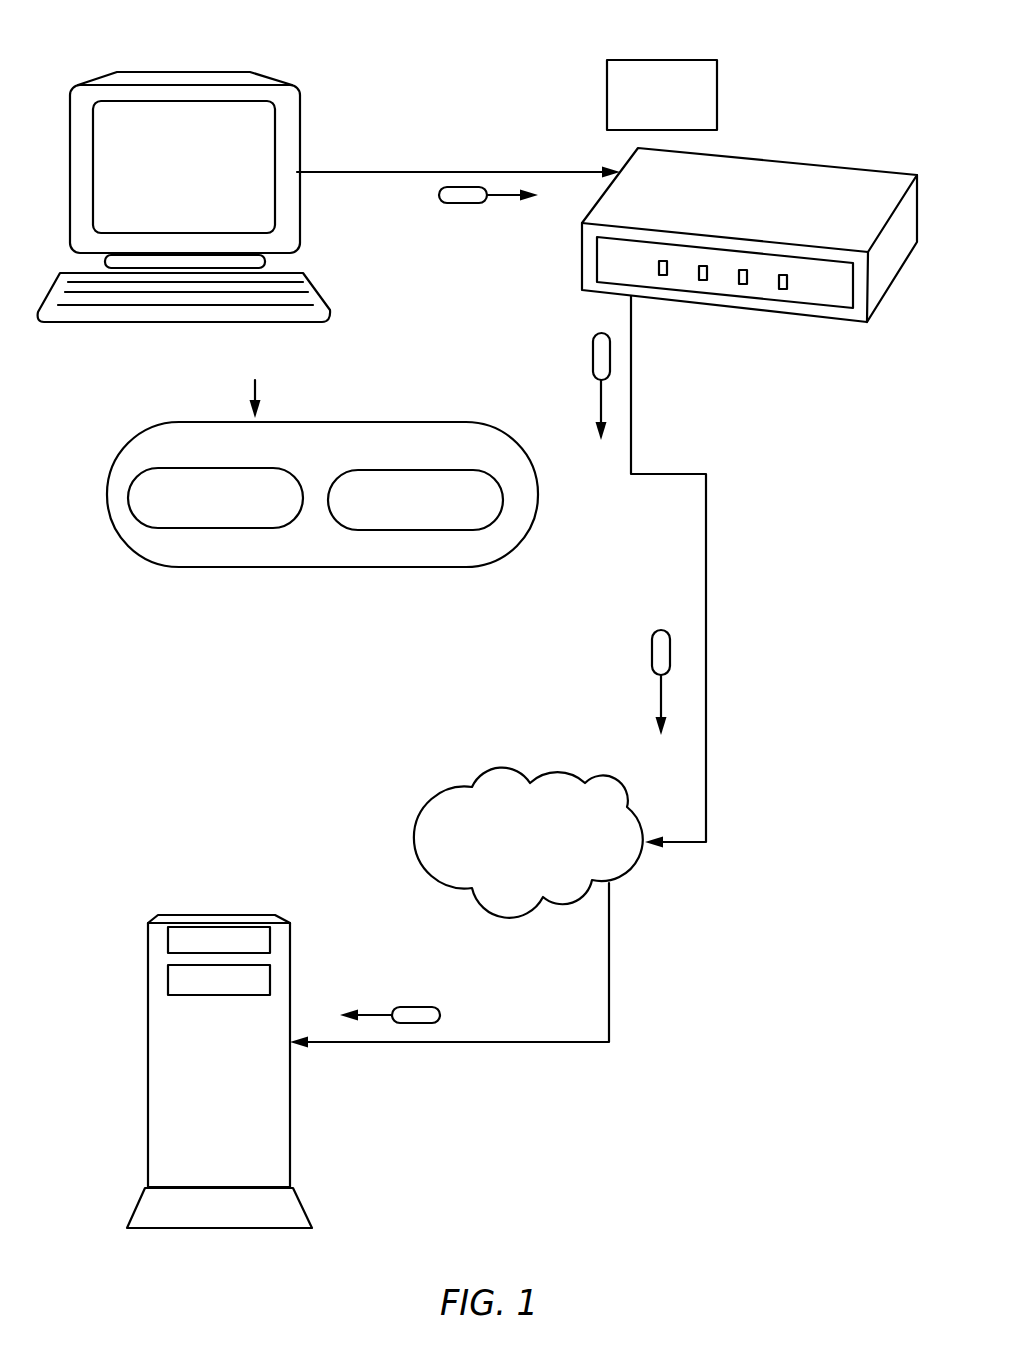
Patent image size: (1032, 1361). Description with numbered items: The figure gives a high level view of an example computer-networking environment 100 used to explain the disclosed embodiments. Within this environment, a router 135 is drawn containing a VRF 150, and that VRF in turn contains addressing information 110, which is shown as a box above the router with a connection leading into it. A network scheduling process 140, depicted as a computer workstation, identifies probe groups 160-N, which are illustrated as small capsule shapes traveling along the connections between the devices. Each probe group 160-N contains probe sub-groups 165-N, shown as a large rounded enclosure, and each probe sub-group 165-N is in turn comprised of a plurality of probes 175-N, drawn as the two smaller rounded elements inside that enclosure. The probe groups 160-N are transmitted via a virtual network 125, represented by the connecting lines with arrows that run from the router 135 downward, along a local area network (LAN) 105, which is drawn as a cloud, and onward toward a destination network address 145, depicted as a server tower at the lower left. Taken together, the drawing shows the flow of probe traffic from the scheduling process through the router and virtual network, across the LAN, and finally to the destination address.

The computer-networking environment 100 is at (496, 78).
The network scheduling process 140 is at (171, 152).
The addressing information 110 is at (645, 89).
The router 135 is at (838, 150).
The VRF 150 is at (653, 146).
The probe groups 160-N is at (456, 605).
The virtual network 125 is at (658, 365).
The probe sub-groups 165-N is at (410, 541).
The probes 175-N is at (176, 508).
The local area network (LAN) 105 is at (529, 851).
The destination network address 145 is at (198, 1077).